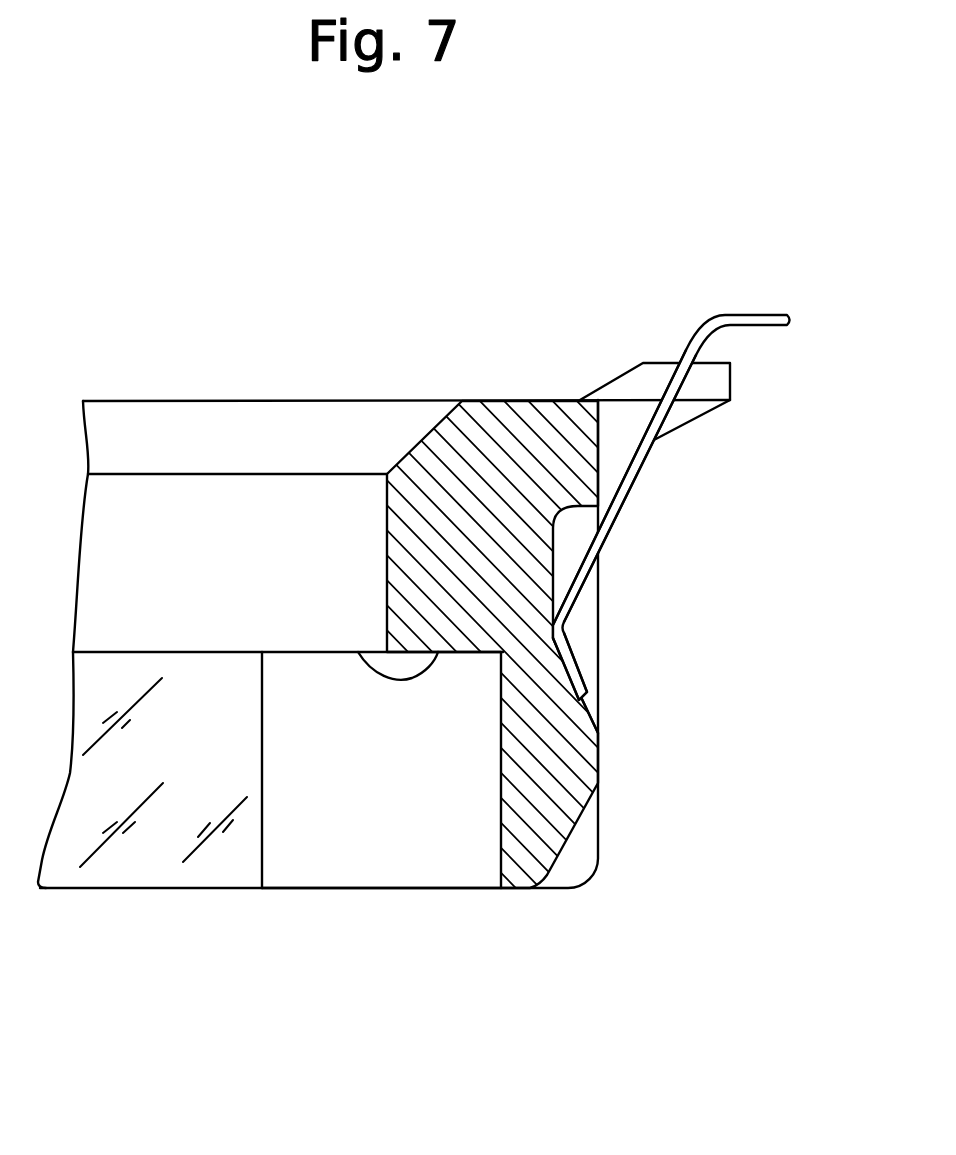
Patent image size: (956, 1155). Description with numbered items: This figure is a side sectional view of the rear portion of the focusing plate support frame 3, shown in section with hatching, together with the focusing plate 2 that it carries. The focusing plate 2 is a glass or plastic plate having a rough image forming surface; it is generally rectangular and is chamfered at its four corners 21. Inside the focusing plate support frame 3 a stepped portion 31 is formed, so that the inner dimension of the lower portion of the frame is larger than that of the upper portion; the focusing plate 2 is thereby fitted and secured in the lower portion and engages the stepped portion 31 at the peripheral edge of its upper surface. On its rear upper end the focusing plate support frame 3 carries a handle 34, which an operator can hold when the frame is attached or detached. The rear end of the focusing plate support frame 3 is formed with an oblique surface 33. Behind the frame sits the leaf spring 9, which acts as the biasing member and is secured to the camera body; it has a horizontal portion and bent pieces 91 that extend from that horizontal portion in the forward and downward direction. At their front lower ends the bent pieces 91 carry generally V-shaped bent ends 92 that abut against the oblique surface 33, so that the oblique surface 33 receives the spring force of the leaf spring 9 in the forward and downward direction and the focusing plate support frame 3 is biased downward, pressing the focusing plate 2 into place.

The focusing plate 2 is at (157, 870).
The corners 21 is at (383, 845).
The focusing plate support frame 3 is at (465, 472).
The stepped portion 31 is at (358, 652).
The oblique surface 33 is at (598, 717).
The handle 34 is at (712, 385).
The leaf spring 9 is at (759, 313).
The bent pieces 91 is at (632, 478).
The bent ends 92 is at (569, 670).